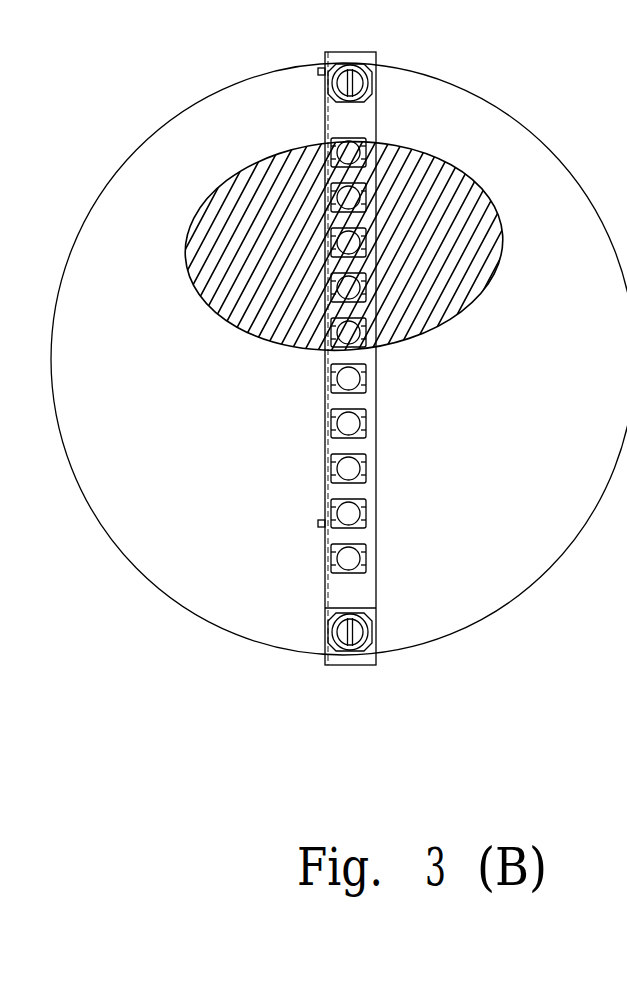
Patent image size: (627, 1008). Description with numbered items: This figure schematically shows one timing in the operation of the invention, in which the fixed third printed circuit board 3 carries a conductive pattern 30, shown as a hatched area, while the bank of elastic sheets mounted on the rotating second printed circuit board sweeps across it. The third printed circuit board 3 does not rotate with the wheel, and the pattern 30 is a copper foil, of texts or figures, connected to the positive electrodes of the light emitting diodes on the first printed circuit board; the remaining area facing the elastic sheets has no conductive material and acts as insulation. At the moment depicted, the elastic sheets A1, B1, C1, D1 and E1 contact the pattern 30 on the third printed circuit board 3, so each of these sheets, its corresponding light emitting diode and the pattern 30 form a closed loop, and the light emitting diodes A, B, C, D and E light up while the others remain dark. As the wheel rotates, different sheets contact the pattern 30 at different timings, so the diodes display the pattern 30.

The third printed circuit board 3 is at (402, 117).
The pattern 30 is at (298, 148).
The elastic sheet A1 is at (356, 157).
The elastic sheet B1 is at (356, 198).
The elastic sheet C1 is at (355, 237).
The elastic sheet D1 is at (355, 282).
The elastic sheet E1 is at (355, 343).